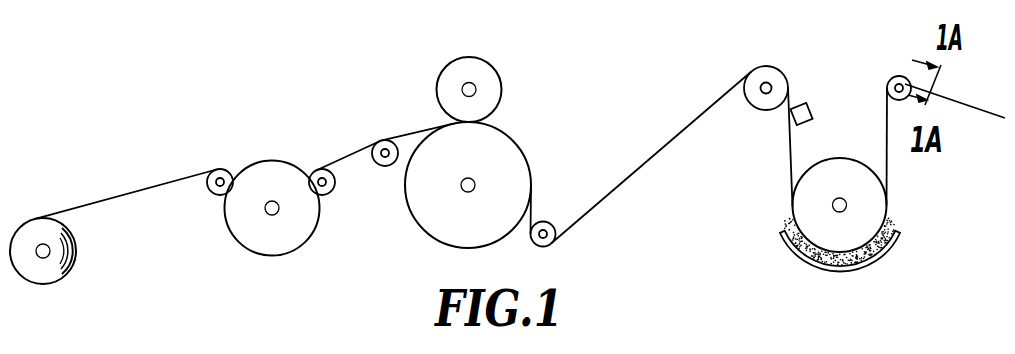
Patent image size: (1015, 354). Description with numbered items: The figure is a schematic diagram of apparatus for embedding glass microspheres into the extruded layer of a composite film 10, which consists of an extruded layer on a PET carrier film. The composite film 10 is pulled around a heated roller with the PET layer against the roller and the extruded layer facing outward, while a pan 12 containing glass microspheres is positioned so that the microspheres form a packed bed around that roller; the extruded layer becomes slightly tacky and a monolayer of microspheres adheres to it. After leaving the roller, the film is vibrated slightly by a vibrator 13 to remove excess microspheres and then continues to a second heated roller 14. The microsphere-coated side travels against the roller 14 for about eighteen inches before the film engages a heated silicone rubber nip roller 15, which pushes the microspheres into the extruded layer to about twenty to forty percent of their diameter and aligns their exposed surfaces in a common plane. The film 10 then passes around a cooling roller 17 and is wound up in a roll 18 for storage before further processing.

The composite film 10 is at (953, 92).
The pan 12 is at (845, 273).
The vibrator 13 is at (808, 105).
The second roller 14 is at (443, 235).
The silicone rubber nip roller 15 is at (483, 65).
The cooling roller 17 is at (267, 172).
The roll 18 is at (65, 277).